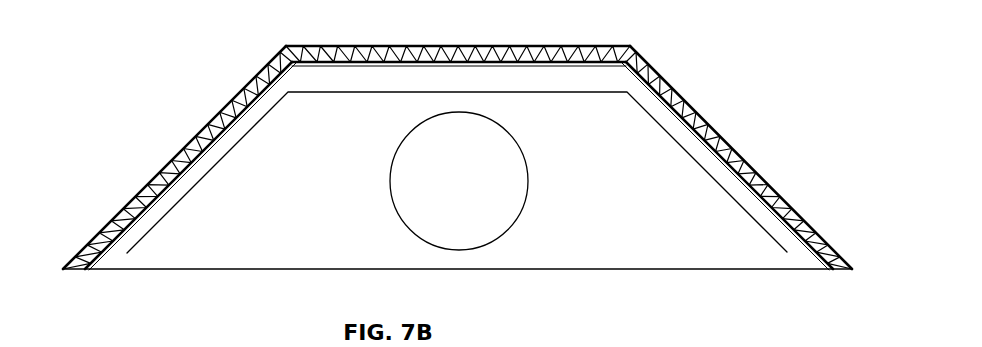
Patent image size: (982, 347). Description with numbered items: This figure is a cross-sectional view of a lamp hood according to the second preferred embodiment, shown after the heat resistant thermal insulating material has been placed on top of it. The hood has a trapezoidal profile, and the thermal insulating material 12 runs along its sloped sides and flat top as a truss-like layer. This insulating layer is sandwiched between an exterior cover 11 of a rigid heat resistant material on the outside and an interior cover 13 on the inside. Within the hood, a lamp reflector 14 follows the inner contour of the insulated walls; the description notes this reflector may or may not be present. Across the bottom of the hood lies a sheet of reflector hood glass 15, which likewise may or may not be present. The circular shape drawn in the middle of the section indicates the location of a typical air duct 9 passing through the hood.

The air duct 9 is at (456, 257).
The exterior cover 11 is at (648, 57).
The thermal insulating material 12 is at (80, 270).
The interior cover 13 is at (811, 258).
The lamp reflector 14 is at (707, 180).
The sheet of reflector hood glass 15 is at (196, 272).